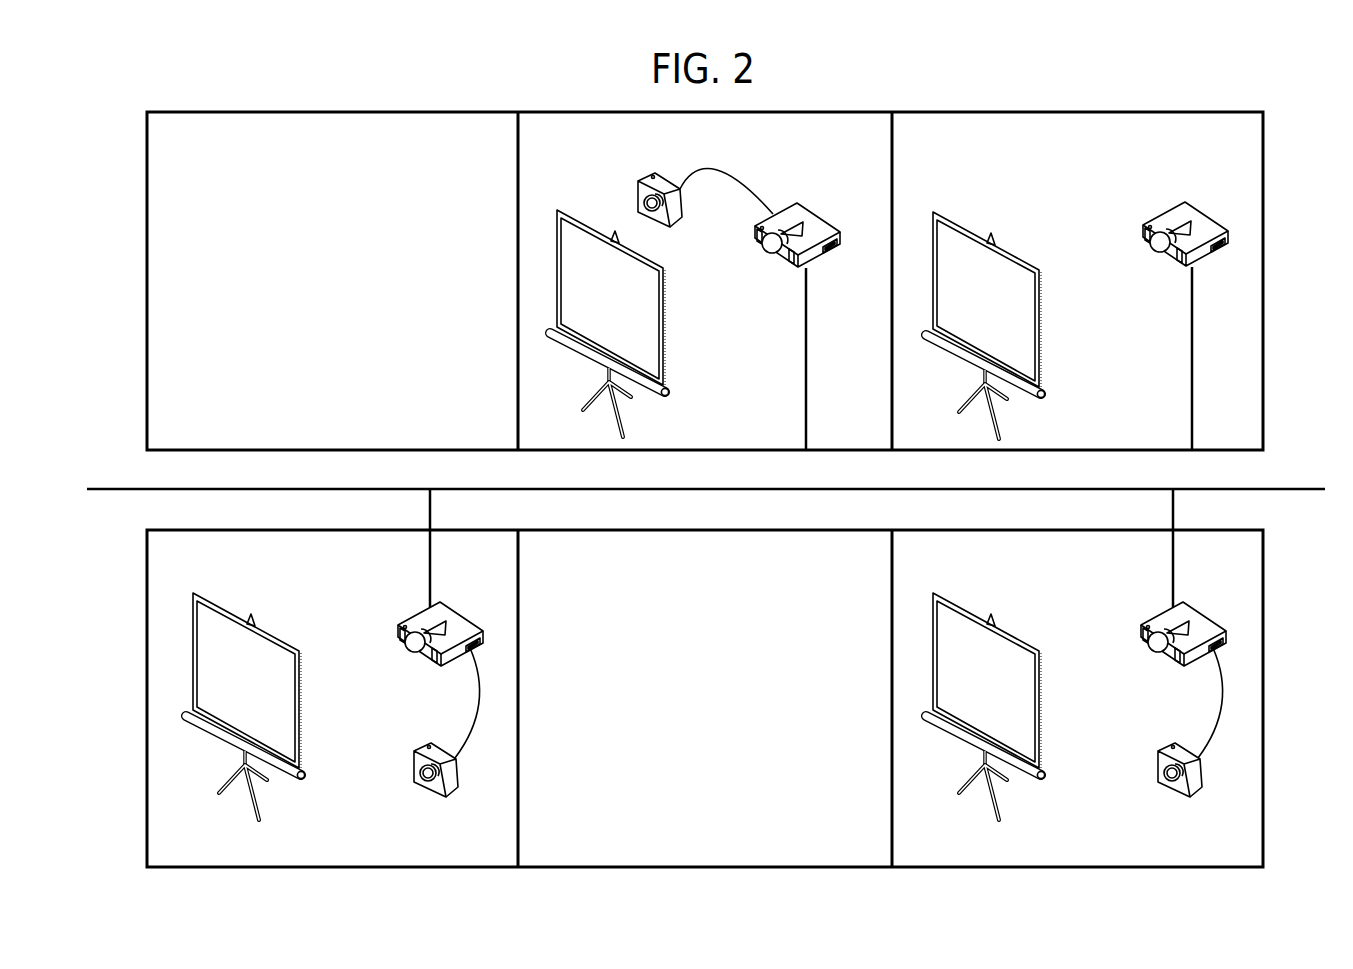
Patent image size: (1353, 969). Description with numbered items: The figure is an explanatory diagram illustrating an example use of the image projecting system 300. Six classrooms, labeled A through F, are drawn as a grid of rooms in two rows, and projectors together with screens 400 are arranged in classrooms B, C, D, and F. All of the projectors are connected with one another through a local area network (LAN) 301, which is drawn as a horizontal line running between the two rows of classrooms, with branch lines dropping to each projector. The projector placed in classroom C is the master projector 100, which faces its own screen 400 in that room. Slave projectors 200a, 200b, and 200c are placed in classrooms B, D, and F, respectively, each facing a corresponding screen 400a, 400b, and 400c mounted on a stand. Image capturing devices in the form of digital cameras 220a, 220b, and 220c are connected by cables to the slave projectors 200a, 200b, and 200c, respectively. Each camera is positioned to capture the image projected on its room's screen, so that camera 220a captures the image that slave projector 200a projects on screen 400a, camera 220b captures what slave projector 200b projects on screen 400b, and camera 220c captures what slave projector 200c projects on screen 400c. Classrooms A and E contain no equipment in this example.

The image projecting system 300 is at (1096, 100).
The local area network (LAN) 301 is at (122, 488).
The master projector 100 is at (1218, 197).
The slave projector 200a is at (826, 196).
The slave projector 200b is at (469, 594).
The slave projector 200c is at (1212, 594).
The digital camera 220a is at (641, 177).
The digital camera 220b is at (417, 748).
The digital camera 220c is at (1161, 748).
The screen 400 is at (1044, 314).
The screen 400a is at (667, 314).
The screen 400b is at (304, 696).
The screen 400c is at (1044, 696).